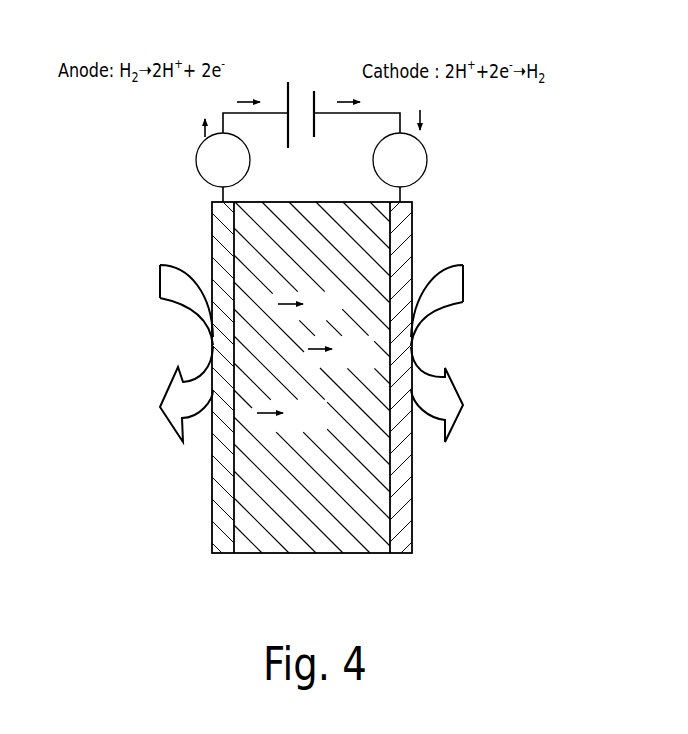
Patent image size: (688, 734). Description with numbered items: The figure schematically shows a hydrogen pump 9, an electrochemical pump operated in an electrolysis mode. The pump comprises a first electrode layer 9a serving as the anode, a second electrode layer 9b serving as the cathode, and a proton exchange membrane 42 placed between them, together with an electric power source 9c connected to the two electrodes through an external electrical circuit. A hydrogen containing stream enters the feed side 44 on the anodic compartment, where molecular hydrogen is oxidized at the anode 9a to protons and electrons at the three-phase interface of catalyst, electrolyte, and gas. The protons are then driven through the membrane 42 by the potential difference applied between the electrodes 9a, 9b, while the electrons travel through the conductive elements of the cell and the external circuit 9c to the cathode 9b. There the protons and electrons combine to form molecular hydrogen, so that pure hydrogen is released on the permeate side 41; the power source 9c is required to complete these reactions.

The hydrogen pump 9 is at (354, 387).
The first electrode layer 9a is at (223, 490).
The second electrode layer 9b is at (400, 455).
The electric power source 9c is at (298, 92).
The permeate side 41 is at (486, 352).
The membrane 42 is at (305, 535).
The feed side 44 is at (164, 352).